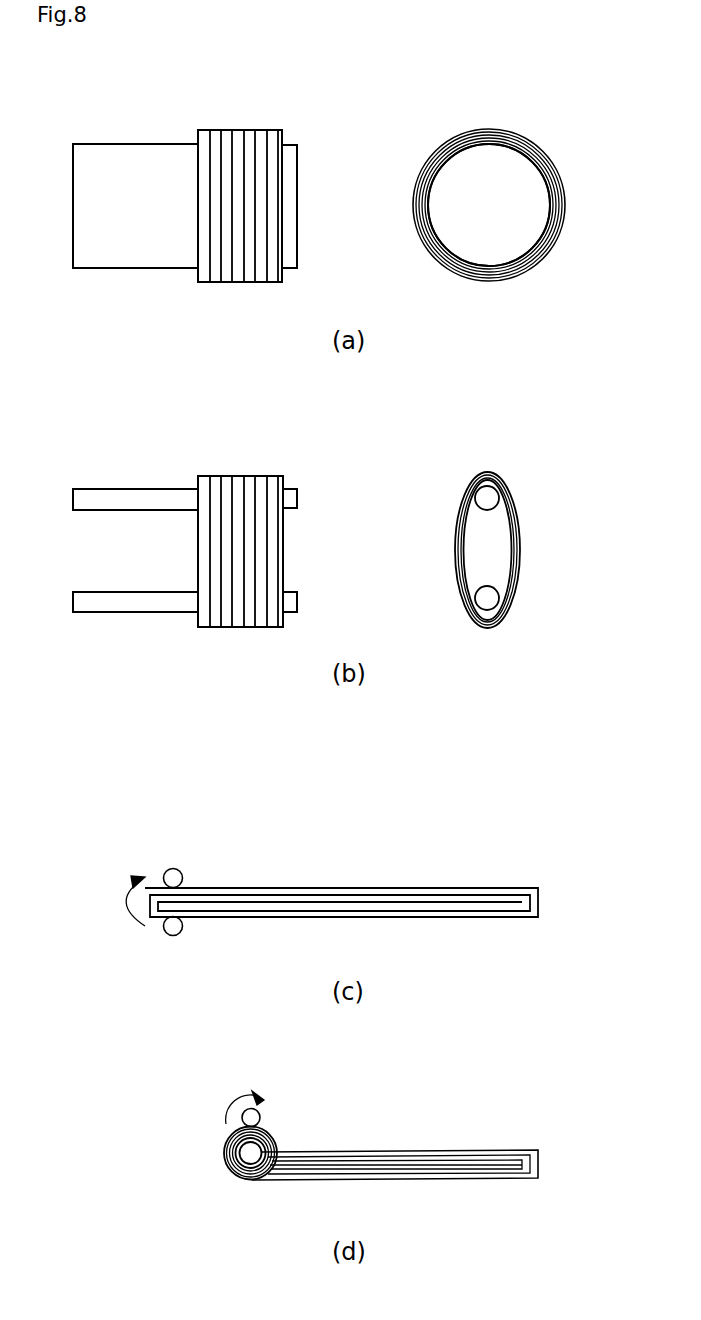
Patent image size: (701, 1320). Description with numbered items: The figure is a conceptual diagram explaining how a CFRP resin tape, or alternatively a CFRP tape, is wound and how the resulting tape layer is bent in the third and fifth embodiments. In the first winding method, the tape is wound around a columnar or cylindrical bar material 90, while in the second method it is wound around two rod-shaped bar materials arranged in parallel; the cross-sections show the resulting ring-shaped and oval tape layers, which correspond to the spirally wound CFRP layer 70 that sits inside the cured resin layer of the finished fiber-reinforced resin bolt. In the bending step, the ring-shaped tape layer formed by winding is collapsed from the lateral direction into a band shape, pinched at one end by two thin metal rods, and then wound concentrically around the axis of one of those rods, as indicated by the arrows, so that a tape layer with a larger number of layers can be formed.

The CFRP layer 70 is at (517, 237).
The bar material 90 is at (143, 144).